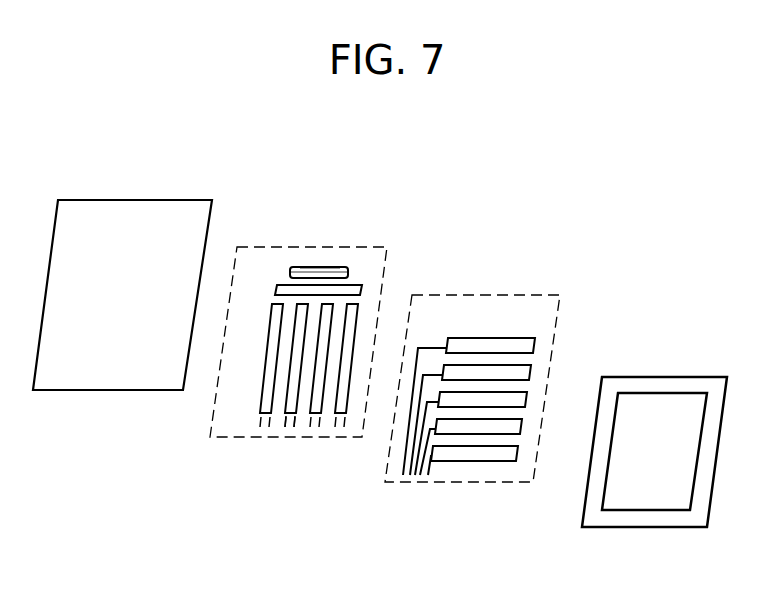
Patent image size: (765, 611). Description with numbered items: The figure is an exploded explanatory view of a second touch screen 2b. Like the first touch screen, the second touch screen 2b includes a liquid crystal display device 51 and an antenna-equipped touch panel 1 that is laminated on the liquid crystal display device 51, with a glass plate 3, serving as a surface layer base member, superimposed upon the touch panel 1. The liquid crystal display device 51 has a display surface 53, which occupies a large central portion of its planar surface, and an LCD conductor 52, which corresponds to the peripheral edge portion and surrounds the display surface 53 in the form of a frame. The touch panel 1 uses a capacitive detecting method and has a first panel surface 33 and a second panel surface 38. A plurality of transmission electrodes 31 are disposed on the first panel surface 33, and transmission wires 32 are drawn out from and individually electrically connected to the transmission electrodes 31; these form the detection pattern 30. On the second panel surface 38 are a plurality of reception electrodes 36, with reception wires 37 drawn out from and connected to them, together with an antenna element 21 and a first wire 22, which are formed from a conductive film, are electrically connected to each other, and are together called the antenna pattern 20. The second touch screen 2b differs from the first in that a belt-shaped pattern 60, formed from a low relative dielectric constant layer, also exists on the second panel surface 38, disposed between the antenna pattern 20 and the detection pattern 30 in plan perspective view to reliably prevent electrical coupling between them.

The glass plate 3 is at (90, 375).
The detection pattern 30 is at (248, 407).
The first wire 22 is at (306, 266).
The antenna element 21 is at (293, 273).
The antenna pattern 20 is at (323, 269).
The pattern formed from a low relative dielectric constant layer 60 is at (357, 285).
The reception electrodes 36 is at (340, 398).
The reception wires 37 is at (288, 422).
The transmission electrodes 31 is at (470, 453).
The transmission wires 32 is at (413, 478).
The second panel surface 38 is at (387, 248).
The first panel surface 33 is at (432, 305).
The antenna-equipped touch panel 1 is at (482, 200).
The second touch screen 2b is at (545, 270).
The liquid crystal display device 51 is at (630, 538).
The LCD conductor 52 is at (648, 383).
The display surface 53 is at (678, 422).